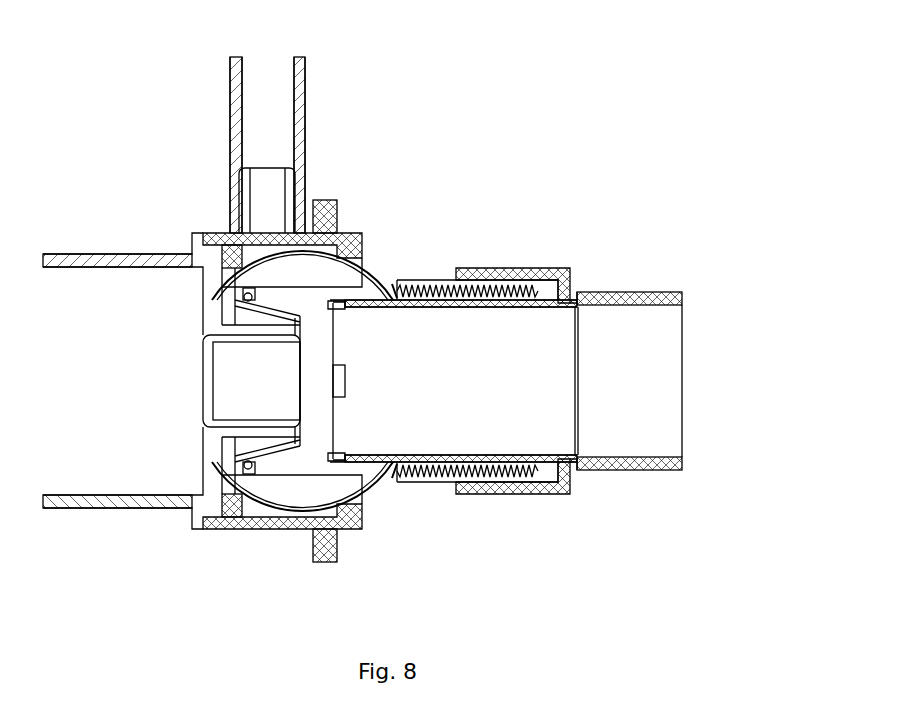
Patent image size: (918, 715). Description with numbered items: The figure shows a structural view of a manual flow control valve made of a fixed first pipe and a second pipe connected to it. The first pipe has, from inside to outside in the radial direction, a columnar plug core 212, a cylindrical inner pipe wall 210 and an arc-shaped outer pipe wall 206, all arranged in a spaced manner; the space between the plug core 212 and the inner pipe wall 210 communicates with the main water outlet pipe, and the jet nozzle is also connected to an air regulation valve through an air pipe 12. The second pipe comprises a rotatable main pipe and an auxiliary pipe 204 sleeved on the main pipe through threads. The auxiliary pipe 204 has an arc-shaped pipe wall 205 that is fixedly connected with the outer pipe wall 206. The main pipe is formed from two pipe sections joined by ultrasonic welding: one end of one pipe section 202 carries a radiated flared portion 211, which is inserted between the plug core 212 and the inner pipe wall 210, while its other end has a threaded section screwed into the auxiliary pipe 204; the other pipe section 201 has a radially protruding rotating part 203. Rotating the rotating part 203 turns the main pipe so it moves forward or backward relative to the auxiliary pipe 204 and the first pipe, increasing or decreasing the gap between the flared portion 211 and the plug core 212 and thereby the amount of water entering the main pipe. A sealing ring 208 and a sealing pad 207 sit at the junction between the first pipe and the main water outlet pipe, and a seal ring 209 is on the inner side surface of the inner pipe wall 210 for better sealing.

The air pipe 12 is at (296, 117).
The pipe section 201 is at (633, 290).
The pipe section 202 is at (438, 466).
The rotating part 203 is at (532, 268).
The auxiliary pipe 204 is at (466, 268).
The arc-shaped pipe wall 205 is at (368, 505).
The arc-shaped outer pipe wall 206 is at (386, 270).
The sealing pad 207 is at (252, 512).
The sealing ring 208 is at (230, 510).
The seal ring 209 is at (250, 292).
The cylindrical inner pipe wall 210 is at (362, 240).
The flared portion 211 is at (260, 308).
The plug core 212 is at (263, 380).